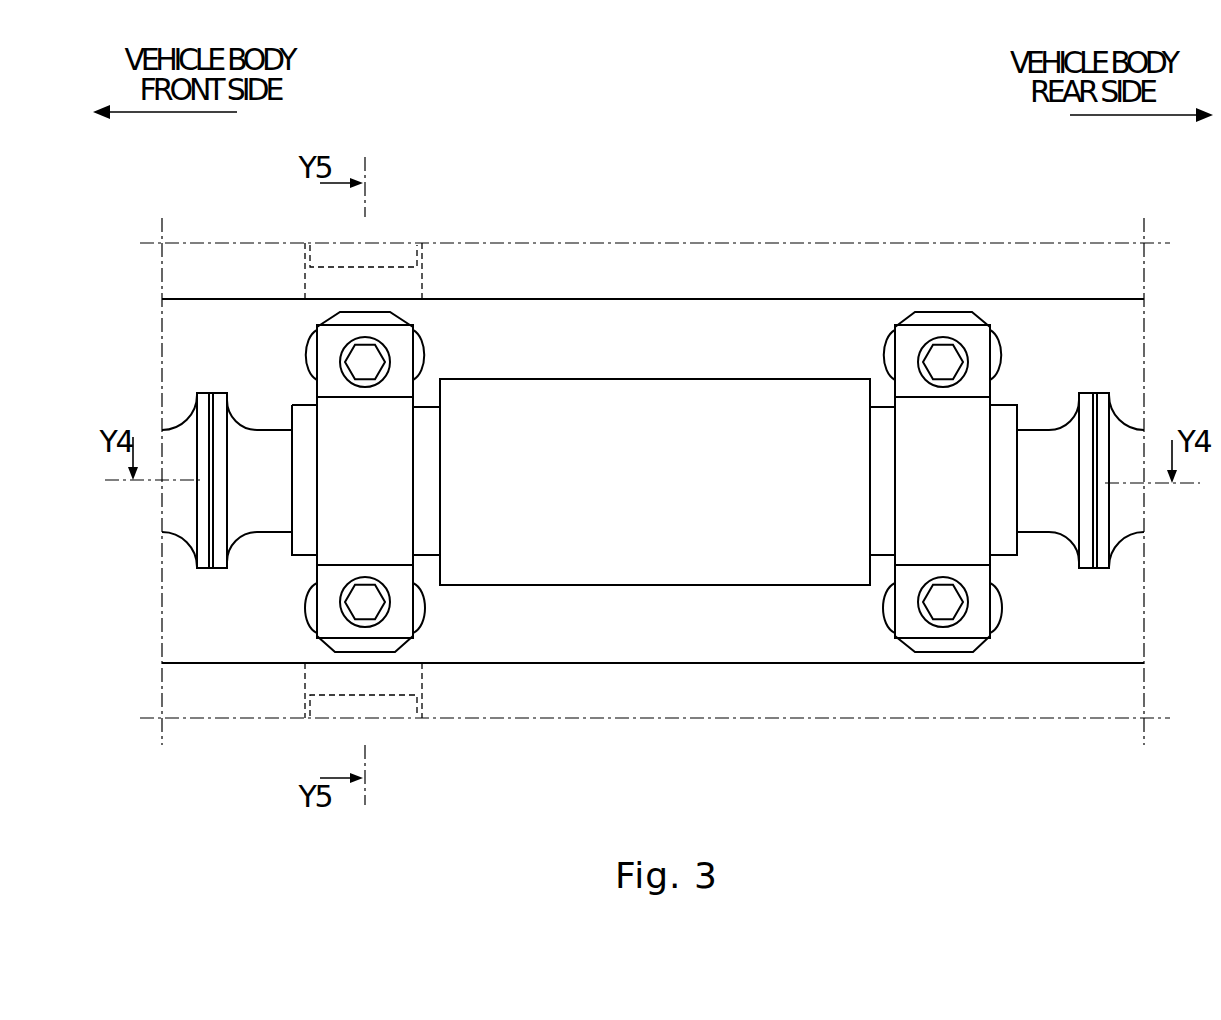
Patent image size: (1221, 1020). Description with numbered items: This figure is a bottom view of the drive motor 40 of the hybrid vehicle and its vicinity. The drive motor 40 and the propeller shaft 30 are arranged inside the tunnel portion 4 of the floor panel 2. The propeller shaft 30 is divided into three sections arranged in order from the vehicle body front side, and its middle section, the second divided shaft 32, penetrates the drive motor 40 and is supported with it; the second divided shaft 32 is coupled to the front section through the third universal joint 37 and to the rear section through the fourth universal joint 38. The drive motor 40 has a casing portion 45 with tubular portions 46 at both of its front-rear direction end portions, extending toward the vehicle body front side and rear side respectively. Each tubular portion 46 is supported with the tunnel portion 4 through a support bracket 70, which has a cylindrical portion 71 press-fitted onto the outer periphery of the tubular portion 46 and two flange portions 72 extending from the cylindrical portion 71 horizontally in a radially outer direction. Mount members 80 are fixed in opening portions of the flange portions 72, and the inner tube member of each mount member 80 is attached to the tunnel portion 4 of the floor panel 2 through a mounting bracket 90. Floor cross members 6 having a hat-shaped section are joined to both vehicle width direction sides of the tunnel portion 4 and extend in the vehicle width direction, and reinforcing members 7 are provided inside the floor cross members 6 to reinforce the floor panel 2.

The floor panel 2 is at (1130, 299).
The tunnel portion 4 is at (1130, 322).
The floor cross member 6 is at (428, 276).
The reinforcing member 7 is at (425, 265).
The propeller shaft 30 is at (1050, 534).
The second divided shaft 32 is at (268, 534).
The third universal joint 37 is at (180, 540).
The fourth universal joint 38 is at (1130, 535).
The drive motor 40 is at (720, 587).
The casing portion 45 is at (620, 379).
The tubular portion 46 is at (300, 405).
The support bracket 70 is at (426, 634).
The cylindrical portion 71 is at (416, 500).
The flange portion 72 is at (416, 387).
The mount member 80 is at (388, 342).
The mounting bracket 90 is at (311, 319).